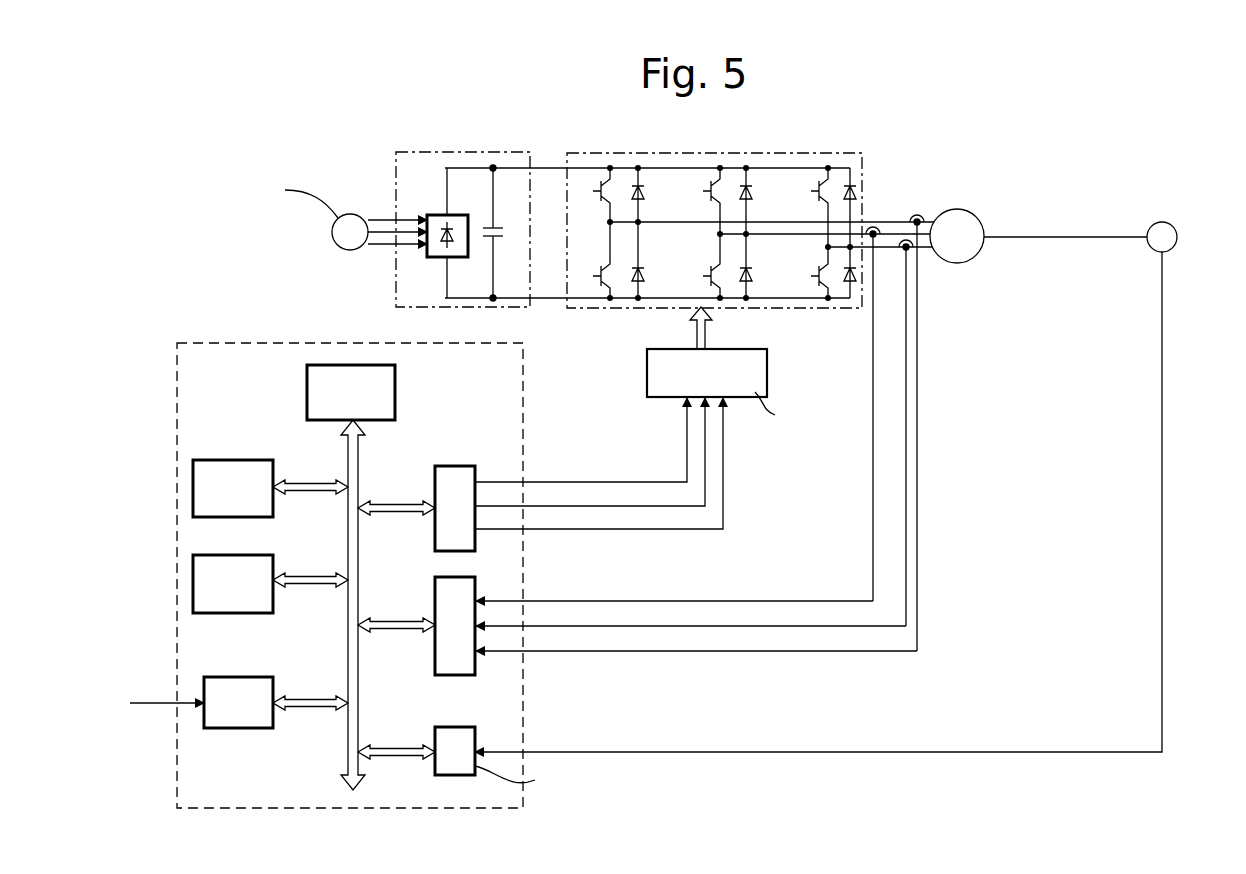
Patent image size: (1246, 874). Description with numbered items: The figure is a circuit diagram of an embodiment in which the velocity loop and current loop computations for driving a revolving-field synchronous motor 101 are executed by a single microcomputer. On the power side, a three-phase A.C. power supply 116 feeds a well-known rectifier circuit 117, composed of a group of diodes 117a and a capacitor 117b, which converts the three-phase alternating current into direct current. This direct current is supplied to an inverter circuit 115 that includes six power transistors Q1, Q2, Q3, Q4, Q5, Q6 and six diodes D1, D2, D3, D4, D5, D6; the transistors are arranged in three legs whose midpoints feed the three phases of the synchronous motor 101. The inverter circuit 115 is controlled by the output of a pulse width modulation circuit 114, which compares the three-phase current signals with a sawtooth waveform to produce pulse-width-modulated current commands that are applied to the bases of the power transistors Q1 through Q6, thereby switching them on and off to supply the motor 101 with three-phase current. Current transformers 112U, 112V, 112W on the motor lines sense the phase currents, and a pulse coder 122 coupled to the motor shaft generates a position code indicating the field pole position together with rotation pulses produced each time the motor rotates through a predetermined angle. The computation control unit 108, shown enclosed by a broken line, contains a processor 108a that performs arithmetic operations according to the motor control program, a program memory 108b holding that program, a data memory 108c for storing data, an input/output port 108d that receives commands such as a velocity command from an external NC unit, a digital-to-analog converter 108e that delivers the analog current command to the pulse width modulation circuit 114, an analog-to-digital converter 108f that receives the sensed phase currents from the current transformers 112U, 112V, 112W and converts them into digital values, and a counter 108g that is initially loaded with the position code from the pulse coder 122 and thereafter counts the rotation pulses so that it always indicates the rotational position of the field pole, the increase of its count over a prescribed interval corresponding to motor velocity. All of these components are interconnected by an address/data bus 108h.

The synchronous motor 101 is at (959, 263).
The computation control unit 108 is at (234, 343).
The processor 108a is at (396, 390).
The program memory 108b is at (246, 460).
The data memory 108c is at (260, 613).
The input/output port 108d is at (250, 728).
The digital-to-analog converter 108e is at (462, 468).
The analog-to-digital converter 108f is at (455, 675).
The counter 108g is at (450, 775).
The address/data bus 108h is at (348, 762).
The current transformer 112U is at (920, 215).
The current transformer 112V is at (878, 227).
The current transformer 112W is at (908, 240).
The pulse width modulation circuit 114 is at (648, 372).
The inverter circuit 115 is at (836, 153).
The three-phase A.C. power supply 116 is at (350, 250).
The rectifier circuit 117 is at (510, 152).
The group of diodes 117a is at (437, 258).
The capacitor 117b is at (498, 224).
The pulse coder 122 is at (1167, 223).
The power transistor Q1 is at (592, 195).
The power transistor Q2 is at (592, 260).
The power transistor Q3 is at (699, 201).
The power transistor Q4 is at (699, 266).
The power transistor Q5 is at (807, 208).
The power transistor Q6 is at (807, 273).
The diode D1 is at (648, 195).
The diode D2 is at (648, 260).
The diode D3 is at (756, 201).
The diode D4 is at (756, 266).
The diode D5 is at (860, 207).
The diode D6 is at (848, 285).